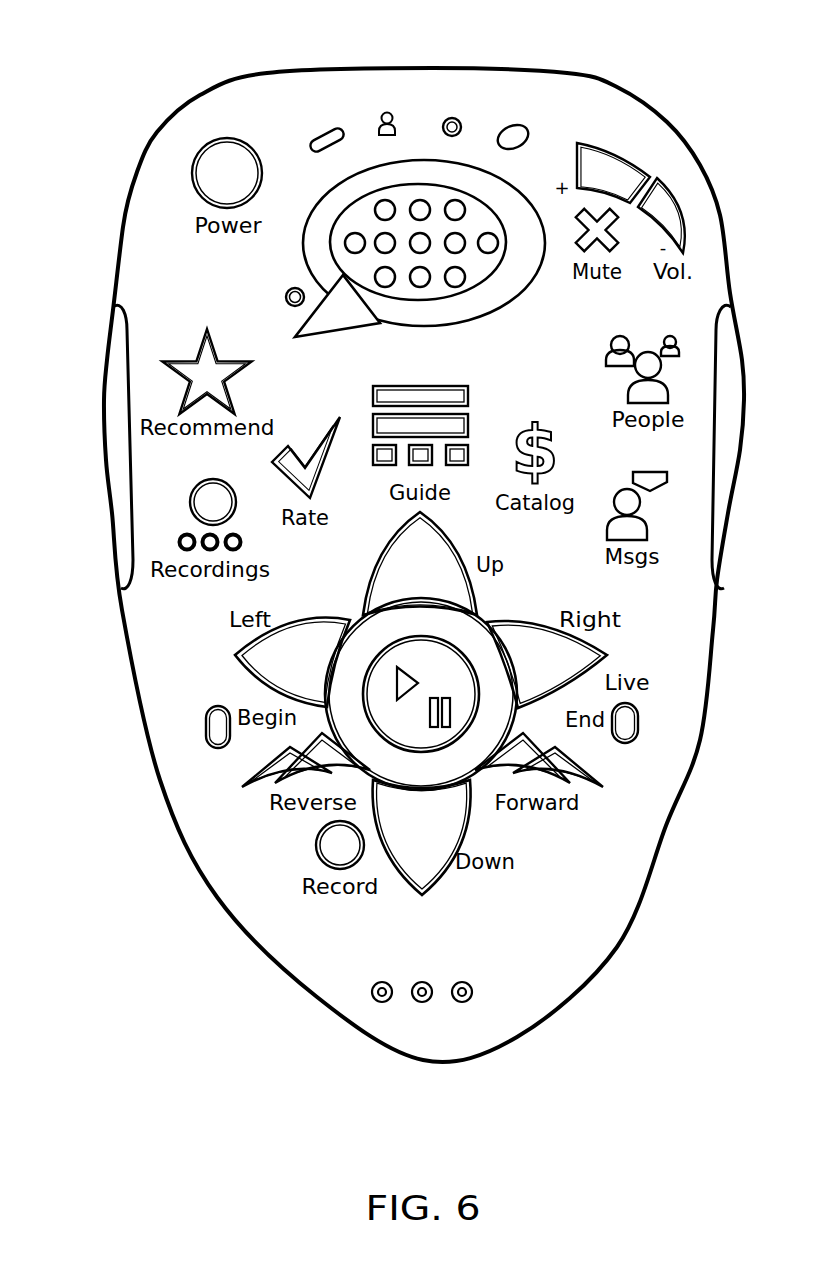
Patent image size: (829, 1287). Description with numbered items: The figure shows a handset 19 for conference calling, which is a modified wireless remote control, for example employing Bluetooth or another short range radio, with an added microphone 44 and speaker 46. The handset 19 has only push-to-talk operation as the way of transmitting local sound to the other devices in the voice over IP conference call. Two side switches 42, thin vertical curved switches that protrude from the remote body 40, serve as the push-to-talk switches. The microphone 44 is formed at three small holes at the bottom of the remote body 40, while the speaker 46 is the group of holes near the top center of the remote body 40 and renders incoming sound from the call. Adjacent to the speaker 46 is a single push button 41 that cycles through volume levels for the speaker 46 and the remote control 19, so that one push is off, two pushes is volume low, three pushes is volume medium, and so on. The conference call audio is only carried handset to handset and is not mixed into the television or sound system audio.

The handset remote control 19 is at (693, 41).
The remote body 40 is at (545, 358).
The push button 41 is at (292, 290).
The side switches 42 is at (102, 407).
The microphone 44 is at (470, 980).
The speaker 46 is at (485, 288).